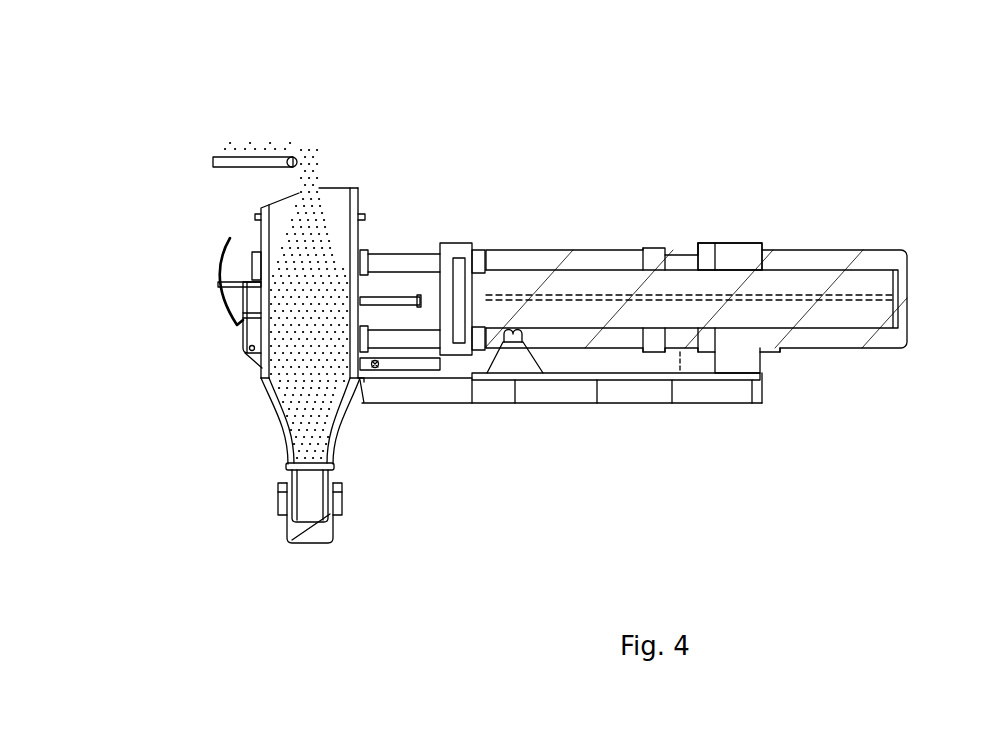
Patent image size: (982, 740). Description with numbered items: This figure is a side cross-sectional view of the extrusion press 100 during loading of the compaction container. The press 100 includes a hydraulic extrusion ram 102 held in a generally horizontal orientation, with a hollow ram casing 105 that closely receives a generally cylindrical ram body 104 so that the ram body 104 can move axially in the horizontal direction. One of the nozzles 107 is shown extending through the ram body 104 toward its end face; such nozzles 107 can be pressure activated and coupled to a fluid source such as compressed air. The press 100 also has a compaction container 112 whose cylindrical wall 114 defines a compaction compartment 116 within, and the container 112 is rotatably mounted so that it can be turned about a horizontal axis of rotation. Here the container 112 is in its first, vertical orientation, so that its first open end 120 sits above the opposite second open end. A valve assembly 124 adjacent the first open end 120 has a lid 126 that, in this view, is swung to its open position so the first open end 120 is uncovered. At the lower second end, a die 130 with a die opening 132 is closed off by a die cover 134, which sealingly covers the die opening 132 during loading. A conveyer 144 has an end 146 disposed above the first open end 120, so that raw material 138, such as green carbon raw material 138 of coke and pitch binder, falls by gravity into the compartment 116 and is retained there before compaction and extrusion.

The extrusion press 100 is at (574, 132).
The extrusion ram 102 is at (793, 223).
The ram body 104 is at (520, 283).
The ram casing 105 is at (772, 262).
The nozzle 107 is at (585, 297).
The compaction container 112 is at (353, 238).
The wall 114 is at (362, 192).
The compaction compartment 116 is at (275, 233).
The first open end 120 is at (355, 203).
The valve assembly 124 is at (223, 307).
The lid 126 is at (218, 270).
The die 130 is at (288, 448).
The die opening 132 is at (313, 458).
The die cover 134 is at (295, 510).
The raw material 138 is at (313, 167).
The conveyer 144 is at (213, 167).
The end 146 is at (295, 145).